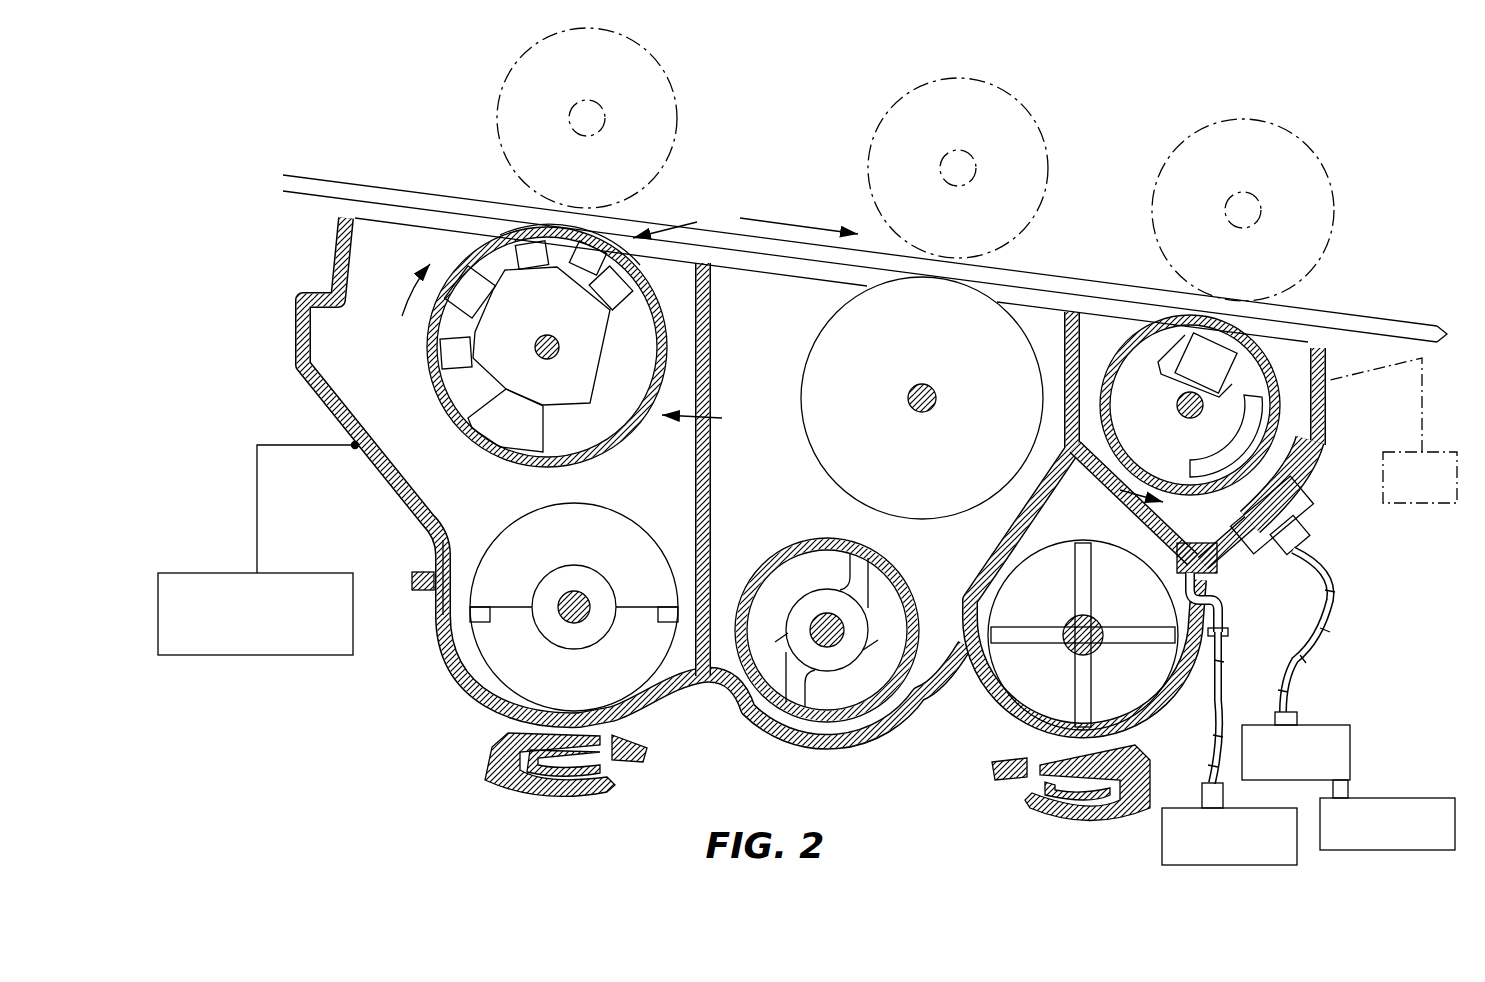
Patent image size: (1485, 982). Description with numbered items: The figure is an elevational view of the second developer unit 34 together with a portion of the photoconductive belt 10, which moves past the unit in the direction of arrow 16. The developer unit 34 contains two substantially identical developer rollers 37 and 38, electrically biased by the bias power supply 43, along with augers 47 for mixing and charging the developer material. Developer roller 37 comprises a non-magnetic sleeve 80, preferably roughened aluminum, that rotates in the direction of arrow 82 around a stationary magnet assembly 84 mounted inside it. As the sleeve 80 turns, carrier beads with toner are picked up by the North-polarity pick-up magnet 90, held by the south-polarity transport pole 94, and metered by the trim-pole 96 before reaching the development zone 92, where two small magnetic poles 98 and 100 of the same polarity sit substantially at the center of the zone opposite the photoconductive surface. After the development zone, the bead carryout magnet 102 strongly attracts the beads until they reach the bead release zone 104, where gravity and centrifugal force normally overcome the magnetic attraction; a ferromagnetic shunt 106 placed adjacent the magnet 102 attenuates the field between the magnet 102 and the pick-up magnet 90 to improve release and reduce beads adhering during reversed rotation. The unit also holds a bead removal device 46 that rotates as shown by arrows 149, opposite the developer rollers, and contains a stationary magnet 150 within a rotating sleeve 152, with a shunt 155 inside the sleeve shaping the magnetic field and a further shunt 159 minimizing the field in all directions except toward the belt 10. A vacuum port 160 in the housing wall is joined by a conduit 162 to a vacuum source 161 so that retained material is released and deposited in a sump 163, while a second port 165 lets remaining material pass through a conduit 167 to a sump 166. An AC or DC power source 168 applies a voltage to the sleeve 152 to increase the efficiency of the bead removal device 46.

The belt 10 is at (360, 176).
The arrow 16 is at (805, 218).
The developer unit 34 is at (467, 683).
The developer roller 37 is at (557, 301).
The developer roller 38 is at (1017, 303).
The bias power supply 43 is at (305, 645).
The bead removal device 46 is at (1243, 368).
The augers 47 is at (623, 672).
The sleeve 80 is at (670, 372).
The arrow 82 is at (408, 296).
The magnet assembly 84 is at (570, 385).
The pick-up magnet 90 is at (480, 418).
The development zone 92 is at (500, 235).
The transport pole 94 is at (440, 366).
The trim-pole 96 is at (462, 275).
The magnetic pole 98 is at (512, 248).
The magnetic pole 100 is at (592, 250).
The bead carryout magnet 102 is at (680, 218).
The bead release zone 104 is at (714, 419).
The ferromagnetic shunt 106 is at (663, 308).
The arrows 149 is at (1110, 510).
The magnet 150 is at (1212, 350).
The sleeve 152 is at (1278, 412).
The shunt 155 is at (1172, 350).
The shunt 159 is at (1292, 470).
The vacuum port 160 is at (1302, 515).
The vacuum source 161 is at (1345, 730).
The conduit 162 is at (1342, 625).
The sump 163 is at (1405, 815).
The second port 165 is at (1210, 585).
The sump 166 is at (1190, 825).
The conduit 167 is at (1218, 700).
The AC or DC power source 168 is at (1423, 497).